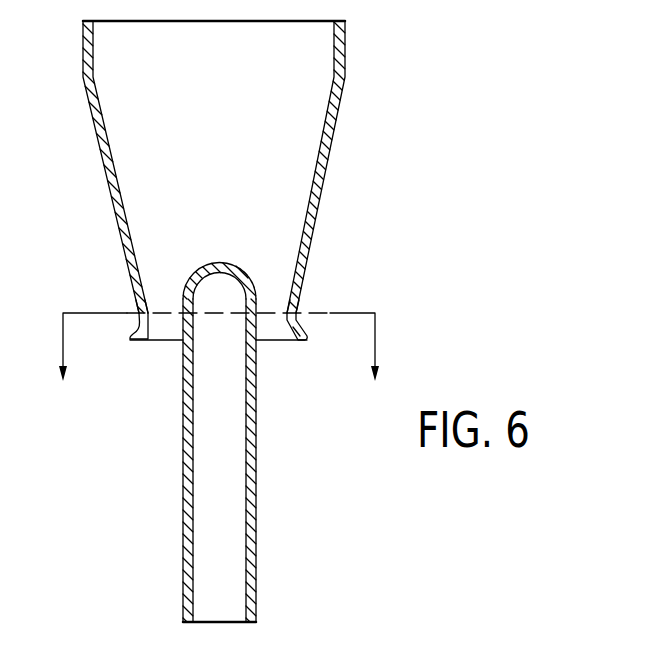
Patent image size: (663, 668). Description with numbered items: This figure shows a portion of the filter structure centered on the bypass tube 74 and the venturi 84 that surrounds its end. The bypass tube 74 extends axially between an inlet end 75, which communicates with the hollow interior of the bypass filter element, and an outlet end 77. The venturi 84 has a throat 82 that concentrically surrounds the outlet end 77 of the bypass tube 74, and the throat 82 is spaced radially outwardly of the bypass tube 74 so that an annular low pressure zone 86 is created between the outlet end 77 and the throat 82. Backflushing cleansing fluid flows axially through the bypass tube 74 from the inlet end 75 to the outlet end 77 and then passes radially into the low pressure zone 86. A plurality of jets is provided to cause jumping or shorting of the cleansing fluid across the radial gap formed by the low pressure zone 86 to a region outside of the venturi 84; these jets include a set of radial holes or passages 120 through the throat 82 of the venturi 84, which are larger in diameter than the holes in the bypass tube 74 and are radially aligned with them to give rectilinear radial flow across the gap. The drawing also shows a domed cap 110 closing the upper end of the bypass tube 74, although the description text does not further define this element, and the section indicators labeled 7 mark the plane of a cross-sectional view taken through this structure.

The section line 7- 7 is at (219, 363).
The bypass tube 74 is at (257, 482).
The inlet end 75 is at (258, 615).
The outlet end 77 is at (254, 332).
The throat 82 is at (138, 332).
The venturi 84 is at (318, 183).
The low pressure zone 86 is at (279, 334).
The dome cap 110 is at (225, 267).
The radial holes 120 is at (140, 305).